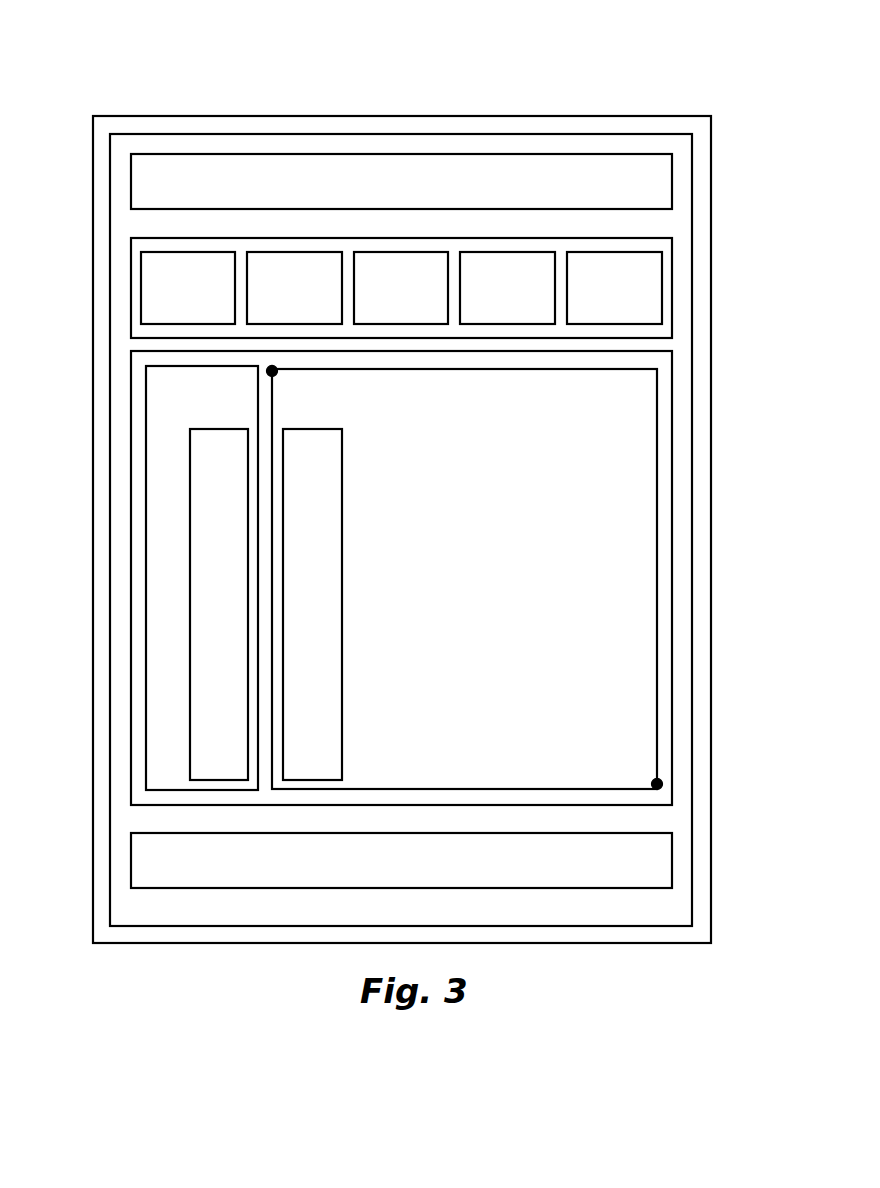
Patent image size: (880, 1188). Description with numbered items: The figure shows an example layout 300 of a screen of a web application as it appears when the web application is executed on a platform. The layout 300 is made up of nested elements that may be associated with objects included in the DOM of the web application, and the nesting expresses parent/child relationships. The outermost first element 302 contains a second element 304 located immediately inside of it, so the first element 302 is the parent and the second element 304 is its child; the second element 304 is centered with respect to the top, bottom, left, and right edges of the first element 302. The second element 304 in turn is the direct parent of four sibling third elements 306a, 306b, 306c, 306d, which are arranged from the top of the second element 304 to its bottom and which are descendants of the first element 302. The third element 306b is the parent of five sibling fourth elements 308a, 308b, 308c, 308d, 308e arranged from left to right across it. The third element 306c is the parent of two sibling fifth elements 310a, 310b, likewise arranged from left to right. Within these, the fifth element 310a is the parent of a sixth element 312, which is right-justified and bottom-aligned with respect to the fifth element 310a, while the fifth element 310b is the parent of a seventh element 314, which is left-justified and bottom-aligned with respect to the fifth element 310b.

The layout 300 is at (700, 63).
The first element 302 is at (93, 155).
The second element 304 is at (110, 216).
The third element 306a is at (420, 193).
The third element 306b is at (672, 283).
The third element 306c is at (672, 423).
The third element 306d is at (420, 871).
The fourth element 308a is at (169, 300).
The fourth element 308b is at (275, 300).
The fourth element 308c is at (382, 300).
The fourth element 308d is at (488, 300).
The fourth element 308e is at (595, 300).
The fifth element 310a is at (183, 394).
The fifth element 310b is at (446, 394).
The sixth element 312 is at (204, 458).
The seventh element 314 is at (297, 458).